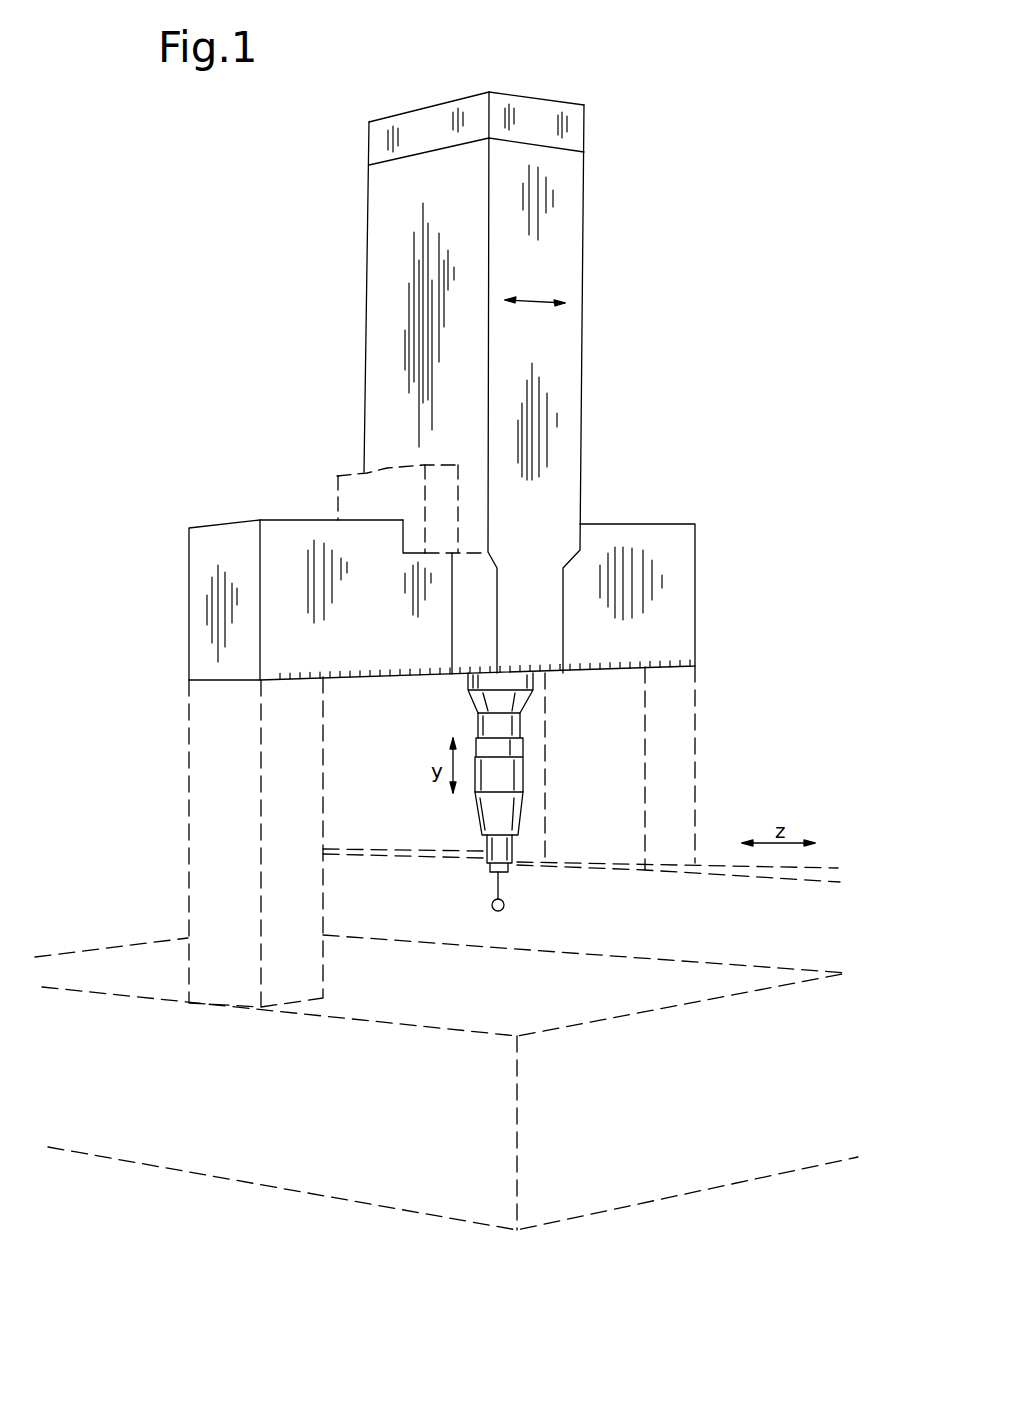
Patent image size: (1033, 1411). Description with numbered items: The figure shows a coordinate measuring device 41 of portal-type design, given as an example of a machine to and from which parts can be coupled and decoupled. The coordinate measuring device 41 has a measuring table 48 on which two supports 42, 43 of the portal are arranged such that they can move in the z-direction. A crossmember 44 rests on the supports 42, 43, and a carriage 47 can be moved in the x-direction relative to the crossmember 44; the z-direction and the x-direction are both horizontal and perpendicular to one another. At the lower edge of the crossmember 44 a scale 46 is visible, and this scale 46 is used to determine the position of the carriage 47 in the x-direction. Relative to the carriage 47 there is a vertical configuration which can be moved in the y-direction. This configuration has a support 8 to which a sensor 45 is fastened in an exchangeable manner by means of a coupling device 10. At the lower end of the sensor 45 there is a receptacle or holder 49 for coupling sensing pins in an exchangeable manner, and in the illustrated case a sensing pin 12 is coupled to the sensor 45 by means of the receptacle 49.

The support 8 is at (518, 681).
The coupling device 10 is at (477, 738).
The sensing pin 12 is at (503, 888).
The coordinate measuring device 41 is at (242, 1200).
The support 42 is at (697, 740).
The support 43 is at (188, 778).
The crossmember 44 is at (226, 522).
The sensor 45 is at (478, 793).
The scale 46 is at (617, 674).
The carriage 47 is at (367, 236).
The measuring table 48 is at (110, 948).
The receptacle 49 is at (503, 848).